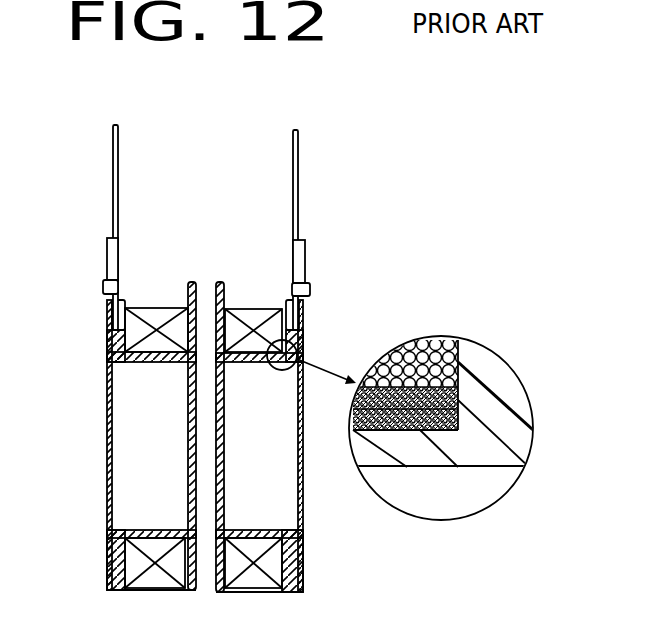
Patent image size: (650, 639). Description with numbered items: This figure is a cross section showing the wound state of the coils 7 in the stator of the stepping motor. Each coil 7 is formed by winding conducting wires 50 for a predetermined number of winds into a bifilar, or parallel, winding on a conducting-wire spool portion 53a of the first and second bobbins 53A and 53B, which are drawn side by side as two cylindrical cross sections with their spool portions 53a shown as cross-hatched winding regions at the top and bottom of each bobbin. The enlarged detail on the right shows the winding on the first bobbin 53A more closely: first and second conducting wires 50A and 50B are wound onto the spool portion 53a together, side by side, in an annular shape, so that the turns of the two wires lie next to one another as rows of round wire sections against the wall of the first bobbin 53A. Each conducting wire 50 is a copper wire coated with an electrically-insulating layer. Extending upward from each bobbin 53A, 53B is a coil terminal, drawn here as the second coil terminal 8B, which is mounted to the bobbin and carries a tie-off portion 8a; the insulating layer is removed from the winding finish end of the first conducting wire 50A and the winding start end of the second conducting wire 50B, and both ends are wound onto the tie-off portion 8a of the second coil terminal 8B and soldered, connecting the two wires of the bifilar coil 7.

The coil 7 is at (168, 302).
The second coil terminal 8B is at (106, 180).
The tie-off portion 8a is at (101, 262).
The first bobbin 53A is at (309, 328).
The second bobbin 53B is at (105, 330).
The conducting-wire spool portion 53a is at (126, 563).
The conducting wire 50 is at (466, 396).
The first conducting wire 50A is at (440, 440).
The second conducting wire 50B is at (437, 437).